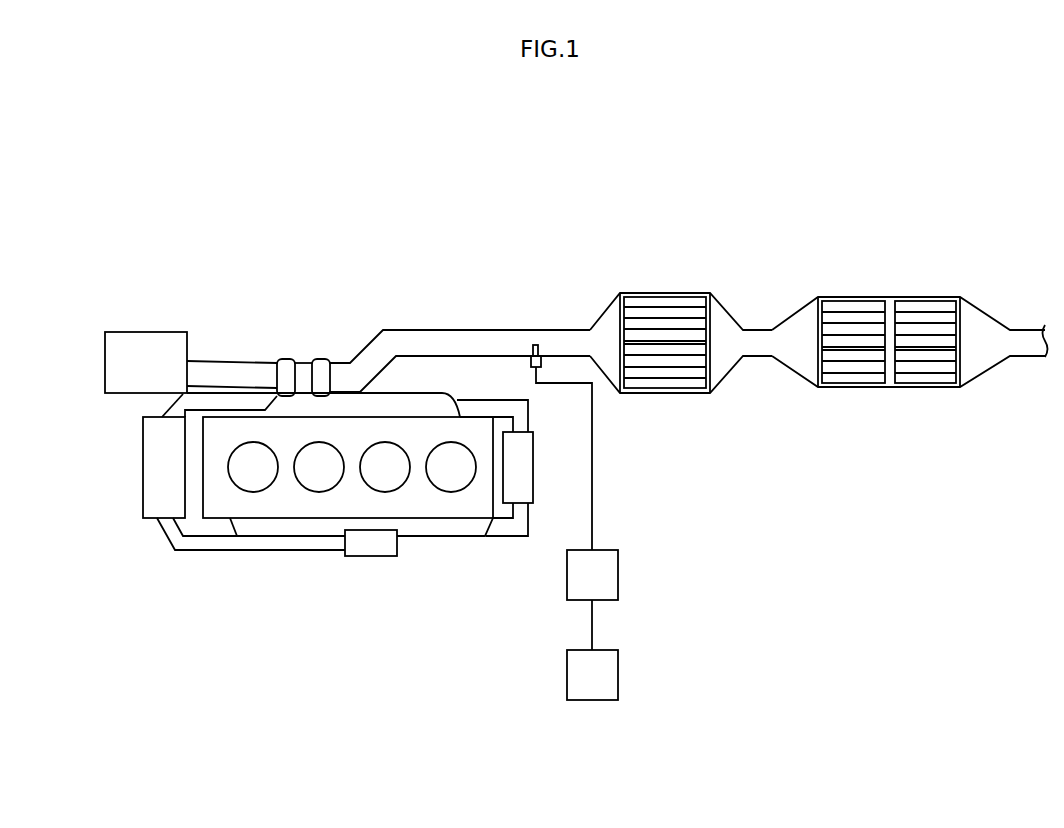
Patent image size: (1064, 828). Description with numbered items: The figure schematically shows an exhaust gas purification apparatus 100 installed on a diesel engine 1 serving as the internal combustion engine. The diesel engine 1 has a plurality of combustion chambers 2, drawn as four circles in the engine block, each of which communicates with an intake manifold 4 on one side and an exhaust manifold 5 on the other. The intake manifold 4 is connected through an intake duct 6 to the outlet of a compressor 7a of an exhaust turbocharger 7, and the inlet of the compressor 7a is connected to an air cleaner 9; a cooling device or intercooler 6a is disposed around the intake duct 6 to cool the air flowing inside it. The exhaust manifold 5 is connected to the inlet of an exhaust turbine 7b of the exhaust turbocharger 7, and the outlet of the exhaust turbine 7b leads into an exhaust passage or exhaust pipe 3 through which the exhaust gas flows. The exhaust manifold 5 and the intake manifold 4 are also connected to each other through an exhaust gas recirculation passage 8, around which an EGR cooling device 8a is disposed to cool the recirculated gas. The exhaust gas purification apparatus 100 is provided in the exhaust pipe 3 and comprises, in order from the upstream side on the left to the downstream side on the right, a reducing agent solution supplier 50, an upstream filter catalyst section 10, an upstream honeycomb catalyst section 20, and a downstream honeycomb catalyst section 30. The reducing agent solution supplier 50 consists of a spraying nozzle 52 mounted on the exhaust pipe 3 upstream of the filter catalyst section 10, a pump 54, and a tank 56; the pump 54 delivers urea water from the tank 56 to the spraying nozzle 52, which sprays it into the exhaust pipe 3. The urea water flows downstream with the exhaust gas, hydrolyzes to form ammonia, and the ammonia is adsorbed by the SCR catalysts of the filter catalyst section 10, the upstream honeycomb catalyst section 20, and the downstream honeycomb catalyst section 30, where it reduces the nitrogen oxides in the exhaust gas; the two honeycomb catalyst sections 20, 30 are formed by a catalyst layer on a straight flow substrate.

The exhaust gas purification apparatus 100 is at (789, 169).
The diesel engine 1 is at (342, 485).
The combustion chambers 2 is at (253, 492).
The exhaust passage (exhaust pipe) 3 is at (441, 335).
The intake manifold 4 is at (424, 525).
The exhaust manifold 5 is at (412, 406).
The intake duct 6 is at (321, 552).
The cooling device (intercooler) 6a is at (153, 477).
The exhaust turbocharger 7 is at (303, 362).
The compressor 7a is at (280, 358).
The exhaust turbine 7b is at (323, 358).
The exhaust gas recirculation passage (EGR passage) 8 is at (523, 418).
The EGR cooling device 8a is at (523, 481).
The air cleaner 9 is at (152, 332).
The upstream filter catalyst section 10 is at (694, 283).
The upstream honeycomb catalyst section 20 is at (862, 303).
The downstream honeycomb catalyst section 30 is at (938, 303).
The reducing agent solution supplier 50 is at (636, 584).
The spraying nozzle 52 is at (538, 345).
The pump 54 is at (618, 583).
The tank 56 is at (618, 687).